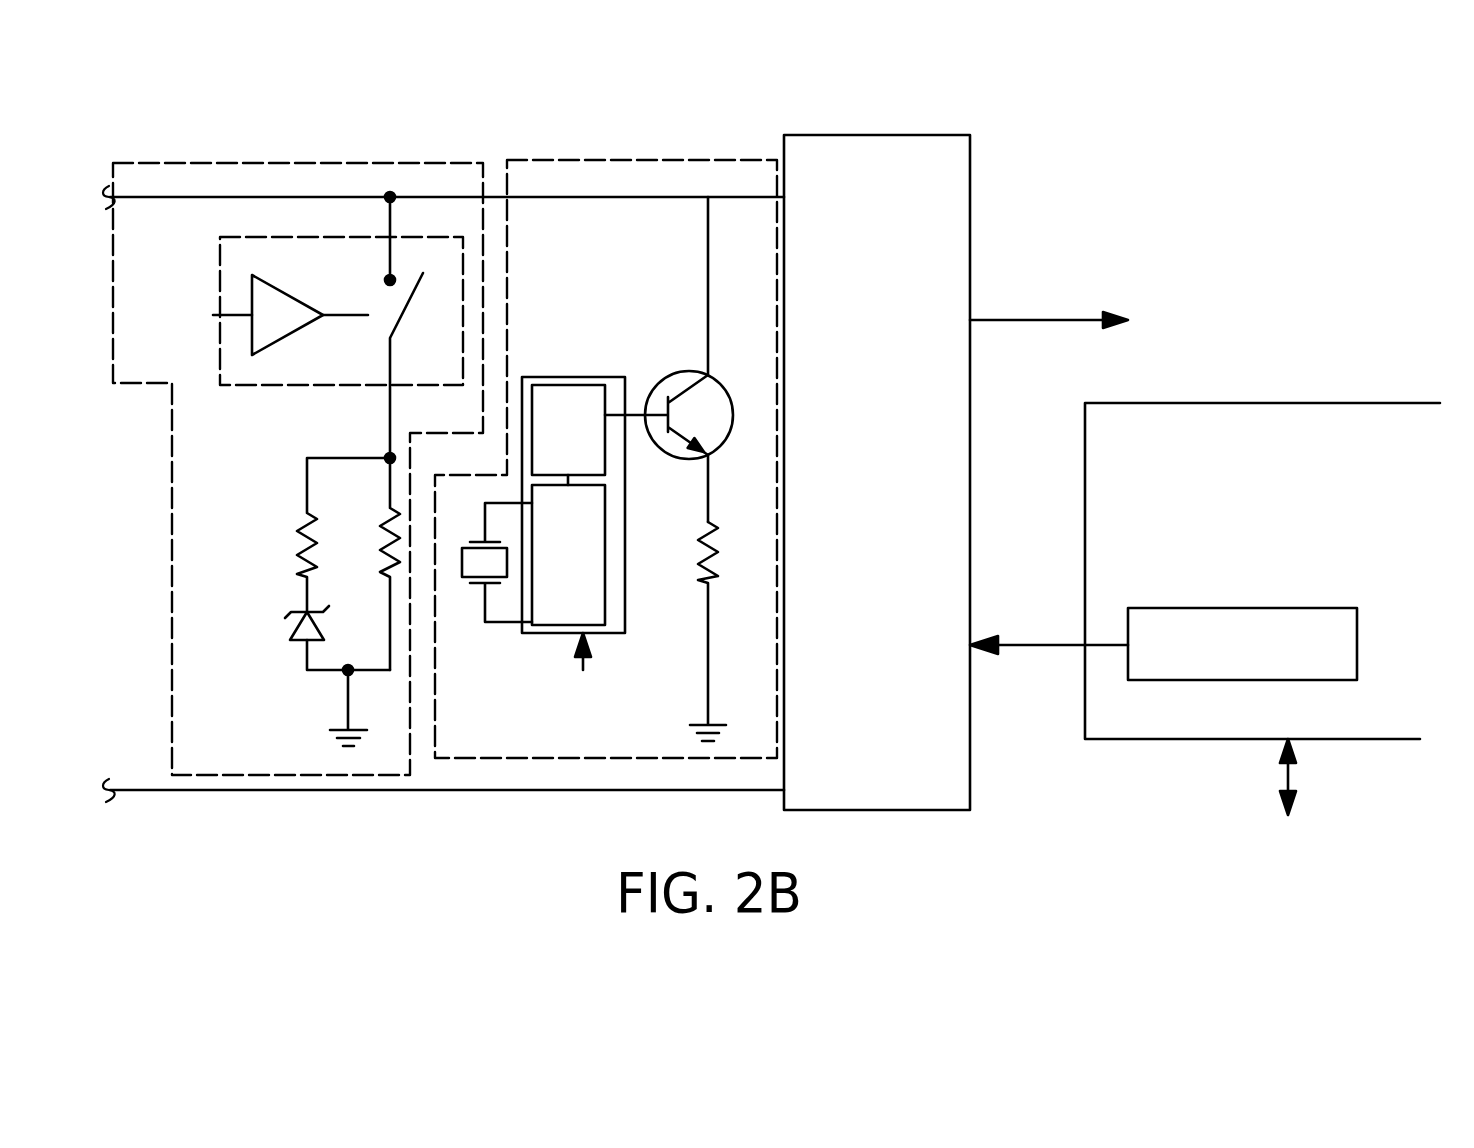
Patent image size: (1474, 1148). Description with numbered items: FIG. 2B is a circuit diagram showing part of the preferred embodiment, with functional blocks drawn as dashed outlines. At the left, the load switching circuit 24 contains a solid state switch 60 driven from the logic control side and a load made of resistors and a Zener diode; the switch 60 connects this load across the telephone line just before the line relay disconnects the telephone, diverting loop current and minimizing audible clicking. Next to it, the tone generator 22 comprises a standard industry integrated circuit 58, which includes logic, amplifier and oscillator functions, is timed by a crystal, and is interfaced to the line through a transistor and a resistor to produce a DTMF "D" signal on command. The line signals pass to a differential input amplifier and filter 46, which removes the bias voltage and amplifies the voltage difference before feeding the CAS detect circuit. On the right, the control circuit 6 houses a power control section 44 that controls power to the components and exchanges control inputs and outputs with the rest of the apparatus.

The control circuit 6 is at (1351, 403).
The tone generator 22 is at (658, 160).
The load switching circuit 24 is at (262, 153).
The power control section 44 is at (1262, 607).
The differential input amplifier and filter 46 is at (970, 182).
The integrated circuit 58 is at (576, 377).
The solid state switch 60 is at (220, 262).